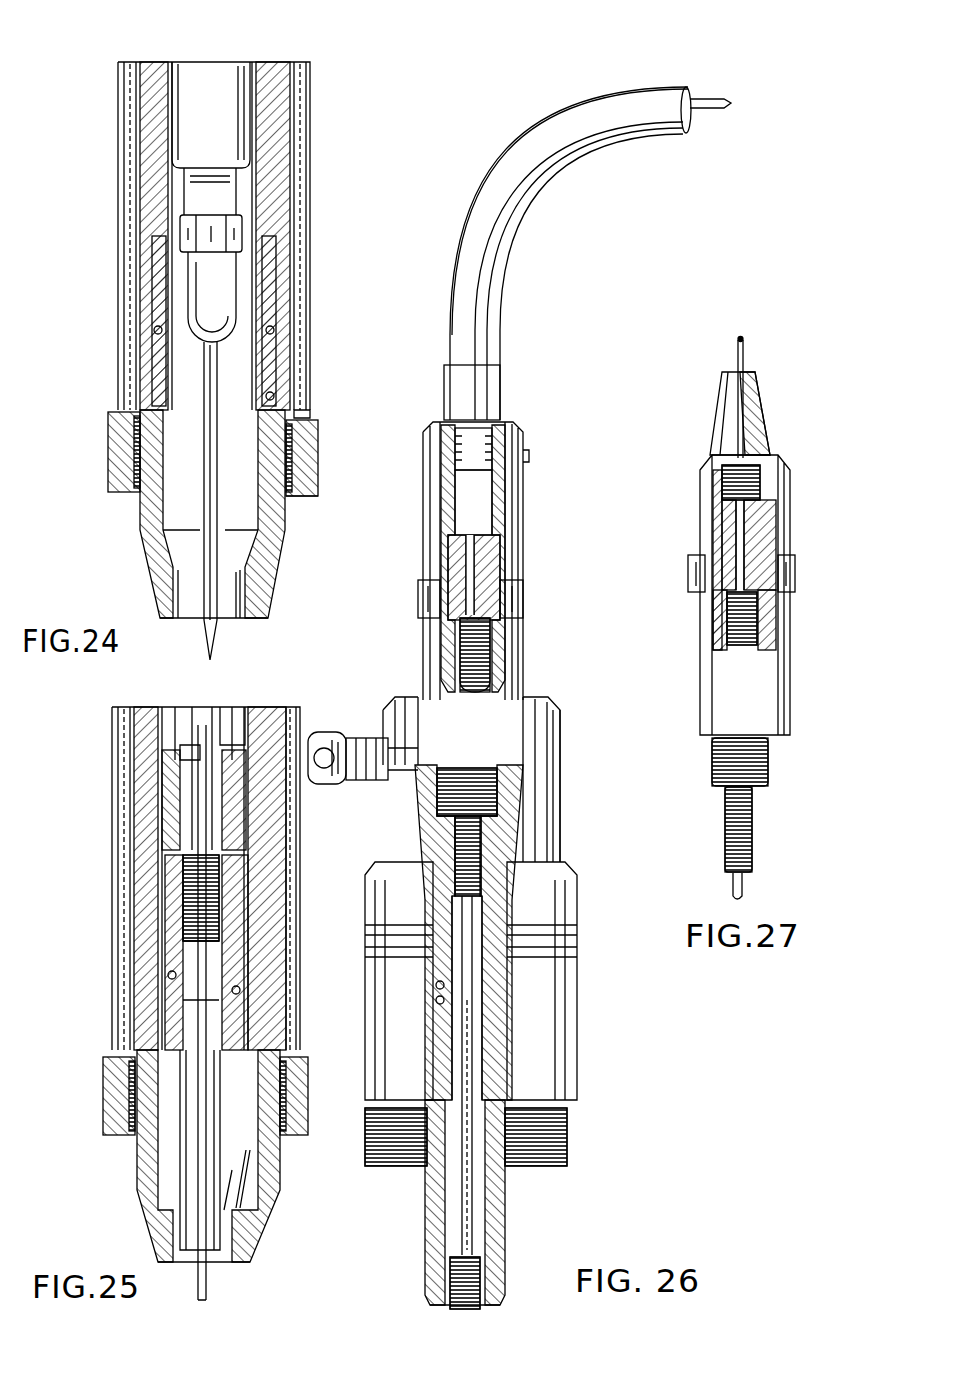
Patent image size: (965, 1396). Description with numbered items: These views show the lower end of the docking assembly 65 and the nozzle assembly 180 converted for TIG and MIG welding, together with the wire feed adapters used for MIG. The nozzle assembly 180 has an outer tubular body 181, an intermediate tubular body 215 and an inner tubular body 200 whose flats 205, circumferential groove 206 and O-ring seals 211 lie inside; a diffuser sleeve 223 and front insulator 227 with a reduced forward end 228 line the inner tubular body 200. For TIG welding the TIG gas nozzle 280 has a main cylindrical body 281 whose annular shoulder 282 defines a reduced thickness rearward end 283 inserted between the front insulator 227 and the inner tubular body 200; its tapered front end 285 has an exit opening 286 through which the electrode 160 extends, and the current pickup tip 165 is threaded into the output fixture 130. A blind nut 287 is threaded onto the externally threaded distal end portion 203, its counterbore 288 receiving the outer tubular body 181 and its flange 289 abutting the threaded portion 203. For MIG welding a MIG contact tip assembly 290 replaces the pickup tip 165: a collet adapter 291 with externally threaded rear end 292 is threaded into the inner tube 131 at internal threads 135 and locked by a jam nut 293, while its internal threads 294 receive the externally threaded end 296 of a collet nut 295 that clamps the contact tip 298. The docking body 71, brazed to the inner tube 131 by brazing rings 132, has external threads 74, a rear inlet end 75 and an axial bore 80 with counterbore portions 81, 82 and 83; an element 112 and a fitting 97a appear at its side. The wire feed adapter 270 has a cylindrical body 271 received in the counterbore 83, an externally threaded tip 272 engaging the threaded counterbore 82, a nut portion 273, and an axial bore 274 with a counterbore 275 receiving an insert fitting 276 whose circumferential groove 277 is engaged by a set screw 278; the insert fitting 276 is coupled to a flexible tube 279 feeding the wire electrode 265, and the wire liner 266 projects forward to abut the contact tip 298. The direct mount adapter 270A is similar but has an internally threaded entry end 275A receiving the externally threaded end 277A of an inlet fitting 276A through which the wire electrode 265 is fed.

In FIG. 26, the docking assembly 65 is at (585, 1105).
In FIG. 26, the docking body 71 is at (579, 984).
In FIG. 26, the external threads 74 is at (567, 1140).
In FIG. 26, the rear inlet end 75 is at (562, 817).
In FIG. 26, the axial bore 80 is at (502, 840).
In FIG. 26, the counterbore portion 81 is at (448, 842).
In FIG. 26, the threaded counterbore portion 82 is at (440, 796).
In FIG. 26, the input counterbore portion 83 is at (512, 702).
In FIG. 26, the fitting sleeve 97a is at (370, 734).
In FIG. 26, the set screw 112 is at (322, 730).
In FIG. 24, the output fixture 130 is at (230, 58).
In FIG. 25, the output fixture 130 is at (168, 704).
In FIG. 26, the output fixture 130 is at (520, 1235).
In FIG. 25, the inner tube 131 is at (238, 706).
In FIG. 26, the inner tube 131 is at (444, 1302).
In FIG. 26, the brazing rings 132 is at (436, 1002).
In FIG. 25, the internal threads 135 is at (172, 812).
In FIG. 24, the electrode 160 is at (203, 630).
In FIG. 24, the current pickup tip 165 is at (242, 270).
In FIG. 24, the nozzle assembly 180 is at (102, 159).
In FIG. 25, the nozzle assembly 180 is at (90, 897).
In FIG. 24, the outer tubular body 181 is at (312, 178).
In FIG. 25, the outer tubular body 181 is at (112, 755).
In FIG. 24, the inner tubular body 200 is at (146, 83).
In FIG. 25, the inner tubular body 200 is at (140, 700).
In FIG. 24, the externally threaded distal end portion 203 is at (122, 450).
In FIG. 25, the externally threaded distal end portion 203 is at (120, 1103).
In FIG. 24, the flats 205 is at (130, 126).
In FIG. 25, the flats 205 is at (292, 940).
In FIG. 24, the circumferential groove 206 is at (150, 358).
In FIG. 25, the circumferential groove 206 is at (286, 1018).
In FIG. 24, the O-ring seals 211 is at (312, 364).
In FIG. 25, the O-ring seals 211 is at (140, 1028).
In FIG. 24, the intermediate tubular body 215 is at (136, 188).
In FIG. 25, the intermediate tubular body 215 is at (130, 838).
In FIG. 24, the diffuser sleeve 223 is at (163, 68).
In FIG. 25, the diffuser sleeve 223 is at (146, 706).
In FIG. 24, the front insulator 227 is at (268, 146).
In FIG. 25, the front insulator 227 is at (148, 870).
In FIG. 24, the reduced outer diameter forward end 228 is at (292, 290).
In FIG. 25, the reduced outer diameter forward end 228 is at (160, 912).
In FIG. 25, the wire electrode 265 is at (212, 710).
In FIG. 26, the wire electrode 265 is at (714, 106).
In FIG. 27, the wire electrode 265 is at (738, 358).
In FIG. 25, the wire liner 266 is at (216, 905).
In FIG. 26, the wire liner 266 is at (486, 652).
In FIG. 27, the wire liner 266 is at (790, 616).
In FIG. 26, the wire feed adapter 270 is at (501, 558).
In FIG. 27, the direct mount adapter 270A is at (808, 576).
In FIG. 26, the cylindrical body 271 is at (428, 514).
In FIG. 26, the externally threaded tip 272 is at (498, 790).
In FIG. 26, the nut portion 273 is at (524, 598).
In FIG. 27, the nut portion 273 is at (741, 573).
In FIG. 26, the axial bore 274 is at (455, 558).
In FIG. 26, the counterbore 275 is at (496, 500).
In FIG. 27, the internally threaded entry end 275A is at (770, 456).
In FIG. 26, the insert fitting 276 is at (500, 394).
In FIG. 27, the inlet fitting 276A is at (768, 392).
In FIG. 26, the circumferential groove 277 is at (466, 462).
In FIG. 27, the externally threaded end 277A is at (702, 488).
In FIG. 26, the set screw 278 is at (528, 456).
In FIG. 26, the flexible tube 279 is at (500, 294).
In FIG. 24, the TIG gas nozzle 280 is at (124, 547).
In FIG. 25, the TIG gas nozzle 280 is at (128, 1216).
In FIG. 24, the main cylindrical body 281 is at (288, 556).
In FIG. 24, the annular shoulder 282 is at (300, 405).
In FIG. 24, the reduced thickness rearward end 283 is at (150, 303).
In FIG. 24, the tapered front end 285 is at (140, 592).
In FIG. 24, the exit opening 286 is at (245, 624).
In FIG. 24, the blind nut 287 is at (316, 458).
In FIG. 25, the blind nut 287 is at (103, 1080).
In FIG. 24, the counterbore 288 is at (314, 430).
In FIG. 24, the flange 289 is at (302, 498).
In FIG. 25, the MIG contact tip assembly 290 is at (162, 1148).
In FIG. 25, the collet adapter 291 is at (172, 940).
In FIG. 25, the externally threaded rear end 292 is at (183, 790).
In FIG. 25, the jam nut 293 is at (246, 850).
In FIG. 25, the internal threads 294 is at (240, 998).
In FIG. 25, the collet nut 295 is at (228, 1092).
In FIG. 25, the externally threaded end 296 is at (170, 972).
In FIG. 25, the contact tip 298 is at (206, 1180).